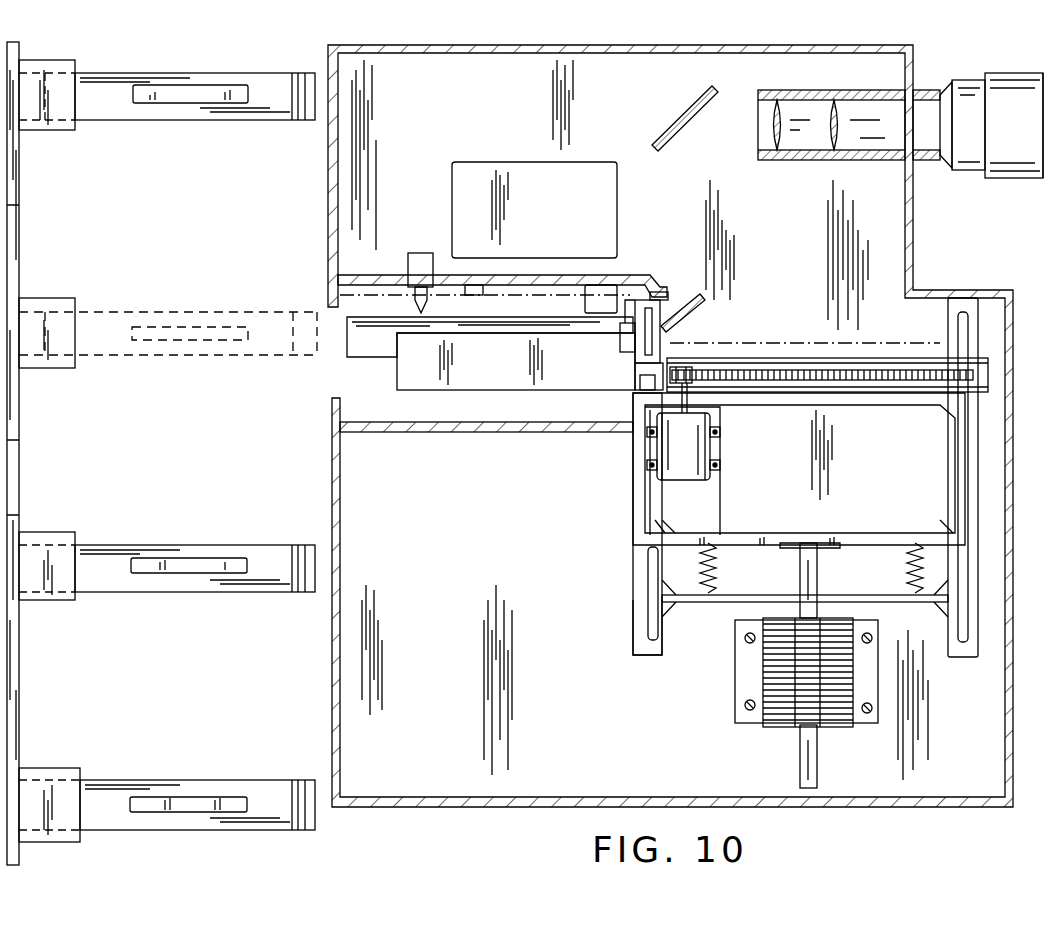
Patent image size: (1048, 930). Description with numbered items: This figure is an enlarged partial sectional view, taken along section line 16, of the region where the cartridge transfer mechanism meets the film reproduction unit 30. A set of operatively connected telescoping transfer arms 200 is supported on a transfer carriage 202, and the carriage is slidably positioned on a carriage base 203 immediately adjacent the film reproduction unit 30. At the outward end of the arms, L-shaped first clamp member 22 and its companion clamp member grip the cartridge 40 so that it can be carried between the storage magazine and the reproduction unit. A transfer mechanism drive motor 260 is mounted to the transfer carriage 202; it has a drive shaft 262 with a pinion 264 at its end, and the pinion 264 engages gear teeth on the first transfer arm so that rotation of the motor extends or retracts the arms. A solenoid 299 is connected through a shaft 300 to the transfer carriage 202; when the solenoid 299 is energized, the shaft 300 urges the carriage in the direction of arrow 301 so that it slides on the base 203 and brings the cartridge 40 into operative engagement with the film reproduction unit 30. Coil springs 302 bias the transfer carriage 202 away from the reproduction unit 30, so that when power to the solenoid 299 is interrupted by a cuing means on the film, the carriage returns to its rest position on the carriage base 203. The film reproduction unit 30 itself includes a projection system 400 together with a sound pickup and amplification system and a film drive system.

The section line 16- 16 is at (308, 312).
The first clamp member 22 is at (183, 113).
The film reproduction unit 30 is at (452, 272).
The cartridge 40 is at (150, 352).
The telescoping transfer arms 200 is at (802, 360).
The transfer carriage 202 is at (648, 510).
The carriage base 203 is at (640, 650).
The transfer mechanism drive motor 260 is at (692, 440).
The drive shaft 262 is at (683, 403).
The pinion 264 is at (667, 363).
The solenoid 299 is at (773, 680).
The shaft 300 is at (760, 605).
The arrow 301 is at (825, 560).
The coil springs 302 is at (707, 575).
The projection system 400 is at (724, 183).